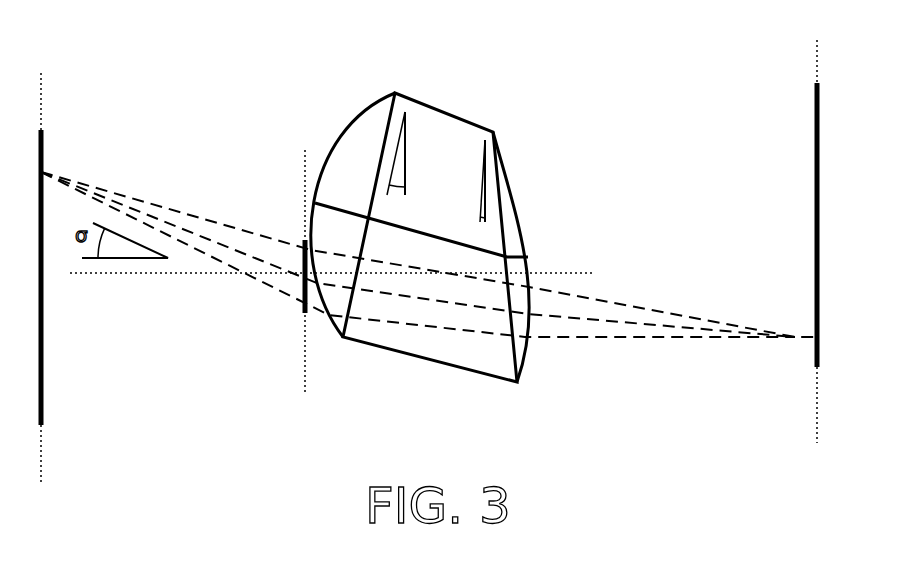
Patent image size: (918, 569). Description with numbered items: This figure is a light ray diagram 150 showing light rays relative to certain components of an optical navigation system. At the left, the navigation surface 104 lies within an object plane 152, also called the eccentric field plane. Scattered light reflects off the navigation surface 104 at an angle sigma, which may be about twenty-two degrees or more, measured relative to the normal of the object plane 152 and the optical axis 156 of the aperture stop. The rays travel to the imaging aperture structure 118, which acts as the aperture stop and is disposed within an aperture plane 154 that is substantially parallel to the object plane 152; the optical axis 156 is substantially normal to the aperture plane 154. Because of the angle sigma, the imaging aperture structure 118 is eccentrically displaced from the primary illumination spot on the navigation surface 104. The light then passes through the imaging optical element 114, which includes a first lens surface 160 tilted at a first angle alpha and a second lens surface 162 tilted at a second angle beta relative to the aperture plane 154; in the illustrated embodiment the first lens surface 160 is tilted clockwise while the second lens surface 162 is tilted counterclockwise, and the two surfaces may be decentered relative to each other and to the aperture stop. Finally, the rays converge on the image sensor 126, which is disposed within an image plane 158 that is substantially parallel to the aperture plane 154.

The light ray diagram 150 is at (210, 50).
The navigation surface 104 is at (44, 358).
The object plane 152 is at (40, 440).
The image sensor 126 is at (815, 228).
The image plane 158 is at (815, 410).
The aperture plane 154 is at (305, 360).
The imaging aperture structure 118 is at (303, 308).
The optical axis 156 is at (157, 274).
The imaging optical element 114 is at (447, 108).
The first lens surface 160 is at (353, 118).
The second lens surface 162 is at (530, 222).